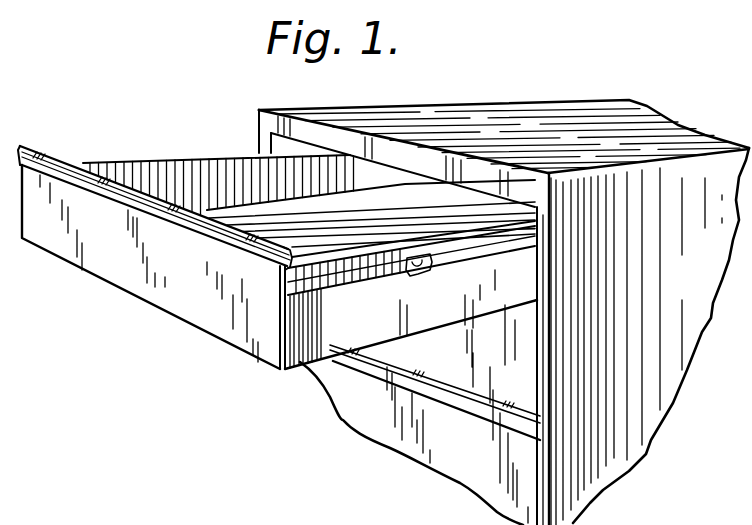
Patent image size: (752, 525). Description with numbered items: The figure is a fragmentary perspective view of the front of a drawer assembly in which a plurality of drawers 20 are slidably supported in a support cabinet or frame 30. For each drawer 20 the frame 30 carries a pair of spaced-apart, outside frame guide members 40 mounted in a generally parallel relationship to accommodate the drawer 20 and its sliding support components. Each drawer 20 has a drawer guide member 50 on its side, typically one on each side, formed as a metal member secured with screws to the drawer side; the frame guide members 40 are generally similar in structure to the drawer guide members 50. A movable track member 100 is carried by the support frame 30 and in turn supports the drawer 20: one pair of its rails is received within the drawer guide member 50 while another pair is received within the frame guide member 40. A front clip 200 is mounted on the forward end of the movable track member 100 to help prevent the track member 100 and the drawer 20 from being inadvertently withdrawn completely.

The drawer 20 is at (404, 348).
The support cabinet or frame 30 is at (506, 95).
The frame guide member 40 is at (582, 243).
The drawer guide member 50 is at (333, 300).
The movable track member 100 is at (505, 270).
The front clip 200 is at (406, 276).